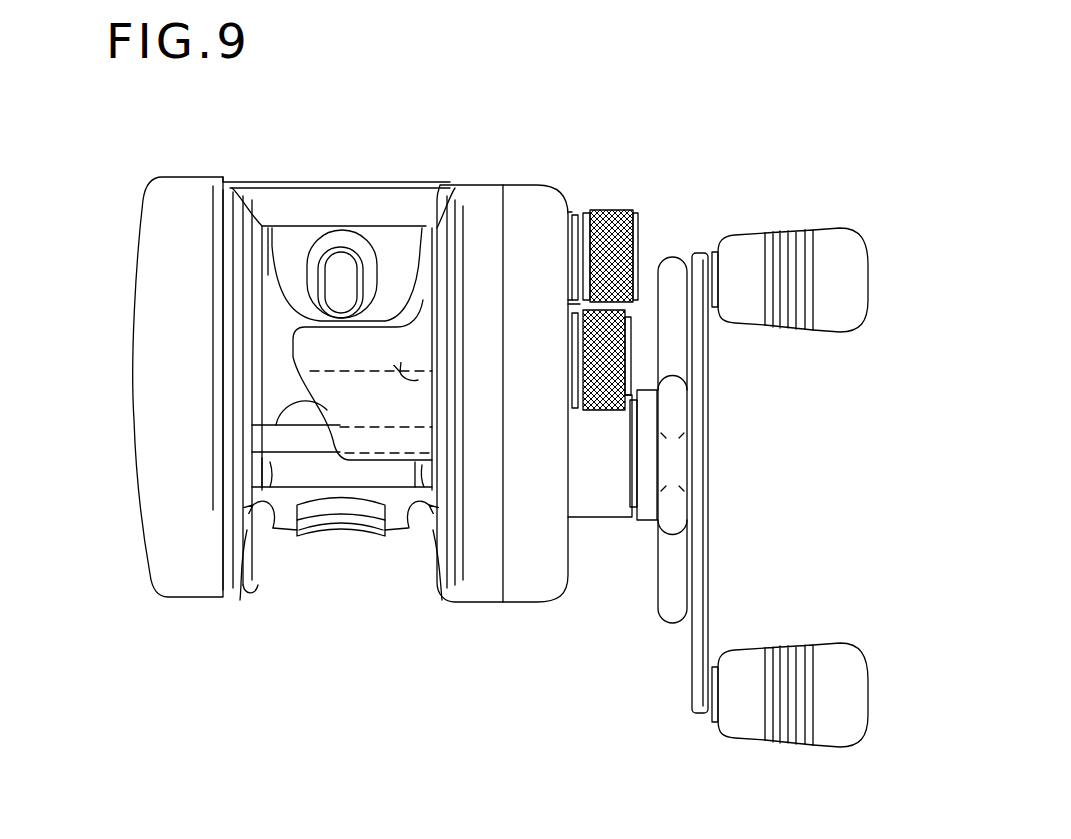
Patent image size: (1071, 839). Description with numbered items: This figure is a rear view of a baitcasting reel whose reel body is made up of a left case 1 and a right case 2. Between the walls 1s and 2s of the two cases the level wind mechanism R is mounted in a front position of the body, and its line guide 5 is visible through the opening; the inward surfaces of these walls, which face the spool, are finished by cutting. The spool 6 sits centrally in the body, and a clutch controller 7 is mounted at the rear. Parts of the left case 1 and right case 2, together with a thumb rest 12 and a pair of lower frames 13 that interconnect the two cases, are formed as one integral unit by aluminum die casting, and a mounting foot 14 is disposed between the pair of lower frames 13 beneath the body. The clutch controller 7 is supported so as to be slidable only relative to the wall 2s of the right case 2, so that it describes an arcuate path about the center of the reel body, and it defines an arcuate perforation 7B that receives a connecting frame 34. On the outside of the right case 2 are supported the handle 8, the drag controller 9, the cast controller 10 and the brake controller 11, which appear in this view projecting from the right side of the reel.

The left case 1 is at (146, 428).
The right case 2 is at (554, 186).
The line guide 5 is at (337, 232).
The level wind mechanism R is at (370, 236).
The spool 6 is at (270, 330).
The clutch controller 7 is at (420, 409).
The arcuate perforation 7B is at (410, 378).
The handle 8 is at (708, 591).
The drag controller 9 is at (666, 618).
The cast controller 10 is at (603, 418).
The brake controller 11 is at (628, 212).
The thumb rest 12 is at (272, 196).
The lower frames 13 is at (285, 522).
The mounting foot 14 is at (350, 526).
The connecting frame 34 is at (258, 431).
The wall of the left case 1s is at (260, 530).
The wall of the right case 2s is at (406, 530).